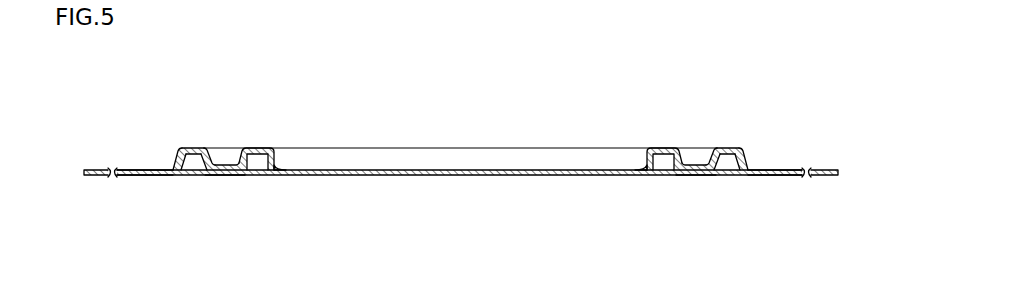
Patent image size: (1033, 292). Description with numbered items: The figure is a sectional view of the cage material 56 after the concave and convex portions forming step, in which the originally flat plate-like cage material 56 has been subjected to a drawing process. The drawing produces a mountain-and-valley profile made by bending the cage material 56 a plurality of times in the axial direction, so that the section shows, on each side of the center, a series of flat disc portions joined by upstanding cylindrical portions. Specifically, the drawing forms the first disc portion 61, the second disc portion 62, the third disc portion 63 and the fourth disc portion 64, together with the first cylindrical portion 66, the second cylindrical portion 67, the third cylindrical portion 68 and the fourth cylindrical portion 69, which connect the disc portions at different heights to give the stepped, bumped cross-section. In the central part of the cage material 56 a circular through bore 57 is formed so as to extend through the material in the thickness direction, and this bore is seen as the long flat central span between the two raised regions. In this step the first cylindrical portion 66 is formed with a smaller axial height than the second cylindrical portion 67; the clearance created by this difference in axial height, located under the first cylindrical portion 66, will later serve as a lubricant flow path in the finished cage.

The cage material 56 is at (779, 93).
The circular through bore 57 is at (463, 163).
The first disc portion 61 is at (255, 152).
The second disc portion 62 is at (219, 176).
The third disc portion 63 is at (196, 149).
The fourth disc portion 64 is at (156, 176).
The first cylindrical portion 66 is at (278, 172).
The second cylindrical portion 67 is at (231, 151).
The third cylindrical portion 68 is at (222, 164).
The fourth cylindrical portion 69 is at (177, 154).